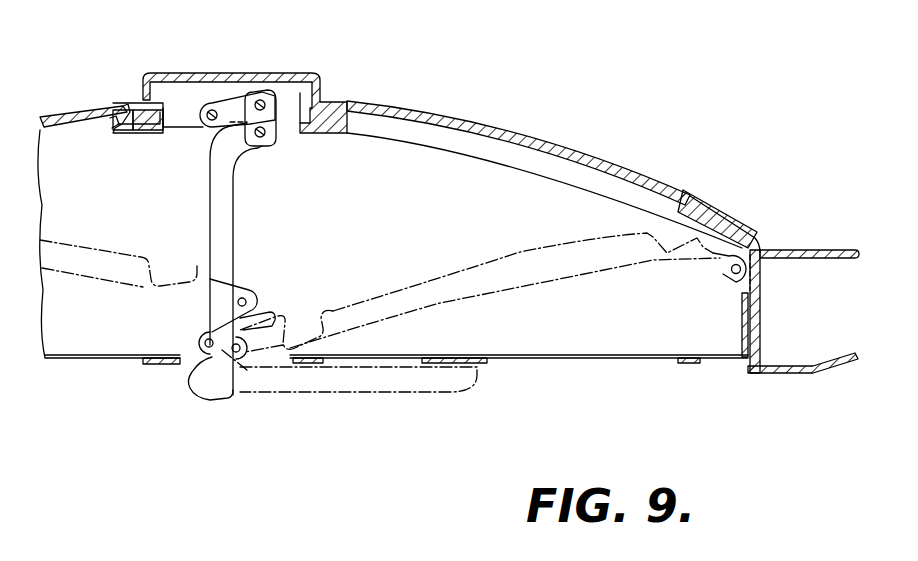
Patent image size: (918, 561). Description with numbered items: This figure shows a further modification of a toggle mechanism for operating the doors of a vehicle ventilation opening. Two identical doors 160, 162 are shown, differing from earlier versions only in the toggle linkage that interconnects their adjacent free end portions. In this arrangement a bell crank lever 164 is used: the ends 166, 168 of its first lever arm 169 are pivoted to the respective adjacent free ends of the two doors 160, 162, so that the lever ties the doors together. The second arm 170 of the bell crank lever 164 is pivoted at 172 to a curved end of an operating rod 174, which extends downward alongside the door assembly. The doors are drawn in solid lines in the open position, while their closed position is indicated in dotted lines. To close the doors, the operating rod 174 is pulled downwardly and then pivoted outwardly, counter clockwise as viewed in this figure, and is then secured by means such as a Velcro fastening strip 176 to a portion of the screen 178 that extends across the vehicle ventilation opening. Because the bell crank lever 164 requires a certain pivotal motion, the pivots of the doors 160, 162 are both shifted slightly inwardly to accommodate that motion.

The door 160 is at (84, 92).
The door 162 is at (494, 132).
The bell crank lever 164 is at (242, 88).
The end 166 is at (210, 126).
The end 168 is at (266, 98).
The first lever arm 169 is at (226, 103).
The second arm 170 is at (274, 128).
The pivot 172 is at (266, 147).
The operating rod 174 is at (229, 228).
The Velcro fastening strip 176 is at (455, 362).
The screen 178 is at (543, 357).